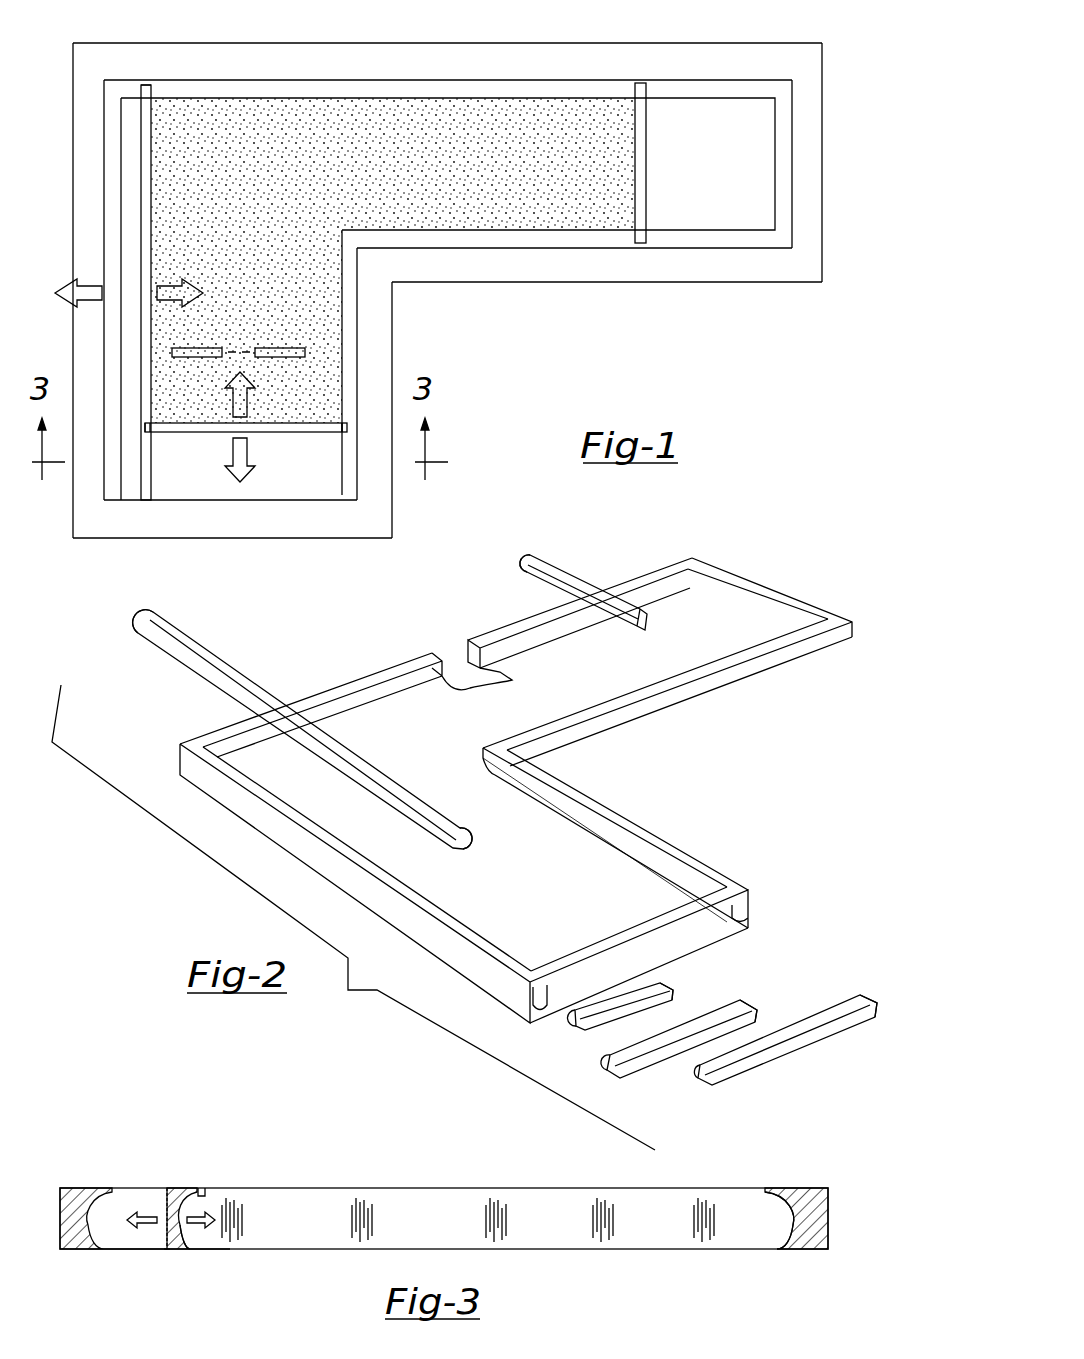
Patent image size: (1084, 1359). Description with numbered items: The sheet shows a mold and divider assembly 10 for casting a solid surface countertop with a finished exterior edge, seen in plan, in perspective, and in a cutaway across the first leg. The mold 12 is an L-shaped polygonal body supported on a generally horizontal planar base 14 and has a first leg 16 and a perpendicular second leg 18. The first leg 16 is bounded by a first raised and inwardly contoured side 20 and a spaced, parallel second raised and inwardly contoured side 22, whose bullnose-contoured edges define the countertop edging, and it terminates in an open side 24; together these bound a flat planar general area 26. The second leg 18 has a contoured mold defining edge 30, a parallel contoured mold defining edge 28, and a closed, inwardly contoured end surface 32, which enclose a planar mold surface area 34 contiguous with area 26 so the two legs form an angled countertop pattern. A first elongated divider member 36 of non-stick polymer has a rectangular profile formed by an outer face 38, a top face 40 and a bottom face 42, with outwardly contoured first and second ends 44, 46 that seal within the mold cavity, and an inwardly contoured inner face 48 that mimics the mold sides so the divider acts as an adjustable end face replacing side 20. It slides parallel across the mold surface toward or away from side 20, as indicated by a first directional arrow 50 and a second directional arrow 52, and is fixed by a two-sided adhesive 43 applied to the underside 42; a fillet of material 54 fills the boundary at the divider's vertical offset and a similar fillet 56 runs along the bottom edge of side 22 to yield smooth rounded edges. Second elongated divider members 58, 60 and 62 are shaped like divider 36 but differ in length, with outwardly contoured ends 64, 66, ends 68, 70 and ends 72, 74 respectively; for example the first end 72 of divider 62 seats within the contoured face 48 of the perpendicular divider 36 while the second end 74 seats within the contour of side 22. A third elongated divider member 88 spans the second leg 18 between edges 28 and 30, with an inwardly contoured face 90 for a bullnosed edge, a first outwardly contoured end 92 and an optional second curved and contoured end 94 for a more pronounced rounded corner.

In FIG. 1, the mold and divider assembly 10 is at (503, 320).
In FIG. 2, the mold and divider assembly 10 is at (464, 816).
In FIG. 3, the mold and divider assembly 10 is at (87, 1138).
In FIG. 1, the mold 12 is at (218, 80).
In FIG. 2, the mold 12 is at (352, 660).
In FIG. 1, the planar base 14 is at (130, 56).
In FIG. 1, the first leg 16 is at (380, 367).
In FIG. 2, the first leg 16 is at (726, 850).
In FIG. 1, the second leg 18 is at (720, 270).
In FIG. 2, the second leg 18 is at (658, 725).
In FIG. 1, the first raised and inwardly contoured side 20 is at (105, 380).
In FIG. 2, the first raised and inwardly contoured side 20 is at (382, 905).
In FIG. 3, the first raised and inwardly contoured side 20 is at (62, 1210).
In FIG. 1, the second raised and inwardly contoured side 22 is at (360, 468).
In FIG. 2, the second raised and inwardly contoured side 22 is at (612, 806).
In FIG. 3, the second raised and inwardly contoured side 22 is at (828, 1195).
In FIG. 1, the open side 24 is at (255, 500).
In FIG. 2, the open side 24 is at (735, 930).
In FIG. 1, the general area 26 is at (248, 265).
In FIG. 2, the general area 26 is at (546, 872).
In FIG. 1, the inwardly contoured mold defining edge 28 is at (610, 80).
In FIG. 2, the inwardly contoured mold defining edge 28 is at (640, 578).
In FIG. 1, the inwardly contoured mold defining edge 30 is at (585, 248).
In FIG. 2, the inwardly contoured mold defining edge 30 is at (755, 672).
In FIG. 1, the inwardly contoured end surface 32 is at (792, 140).
In FIG. 2, the inwardly contoured end surface 32 is at (772, 590).
In FIG. 1, the general planar mold surface area 34 is at (484, 174).
In FIG. 2, the general planar mold surface area 34 is at (707, 636).
In FIG. 1, the first elongated divider member 36 is at (145, 145).
In FIG. 2, the first elongated divider member 36 is at (160, 652).
In FIG. 3, the first elongated divider member 36 is at (168, 1190).
In FIG. 3, the outer face 38 is at (160, 1235).
In FIG. 3, the top face 40 is at (196, 1200).
In FIG. 3, the bottom face 42 is at (176, 1247).
In FIG. 3, the two-sided adhesive 43 is at (167, 1247).
In FIG. 2, the first end 44 is at (140, 620).
In FIG. 2, the second end 46 is at (458, 852).
In FIG. 1, the inwardly contoured inner face 48 is at (150, 492).
In FIG. 3, the inwardly contoured inner face 48 is at (203, 1197).
In FIG. 1, the first directional arrow 50 is at (90, 292).
In FIG. 3, the first directional arrow 50 is at (147, 1214).
In FIG. 1, the second directional arrow 52 is at (168, 290).
In FIG. 3, the second directional arrow 52 is at (218, 1220).
In FIG. 3, the fillet of material 54 is at (197, 1246).
In FIG. 3, the fillet 56 is at (772, 1250).
In FIG. 1, the divider member 58 is at (280, 345).
In FIG. 2, the divider member 58 is at (607, 1025).
In FIG. 1, the divider member 60 is at (197, 352).
In FIG. 2, the divider member 60 is at (672, 1060).
In FIG. 1, the divider member 62 is at (300, 432).
In FIG. 2, the divider member 62 is at (792, 1050).
In FIG. 2, the outwardly contoured end 64 is at (576, 1020).
In FIG. 2, the outwardly contoured end 66 is at (670, 990).
In FIG. 2, the outwardly contoured end 68 is at (612, 1070).
In FIG. 2, the outwardly contoured end 70 is at (757, 1015).
In FIG. 1, the first outer contoured end 72 is at (148, 432).
In FIG. 2, the first outer contoured end 72 is at (702, 1082).
In FIG. 1, the second outer contoured end 74 is at (345, 432).
In FIG. 2, the second outer contoured end 74 is at (870, 1003).
In FIG. 1, the third elongated divider member 88 is at (645, 167).
In FIG. 2, the third elongated divider member 88 is at (580, 585).
In FIG. 2, the inwardly contoured face 90 is at (556, 582).
In FIG. 2, the first outwardly contoured end 92 is at (530, 568).
In FIG. 2, the second curved and contoured end 94 is at (636, 626).